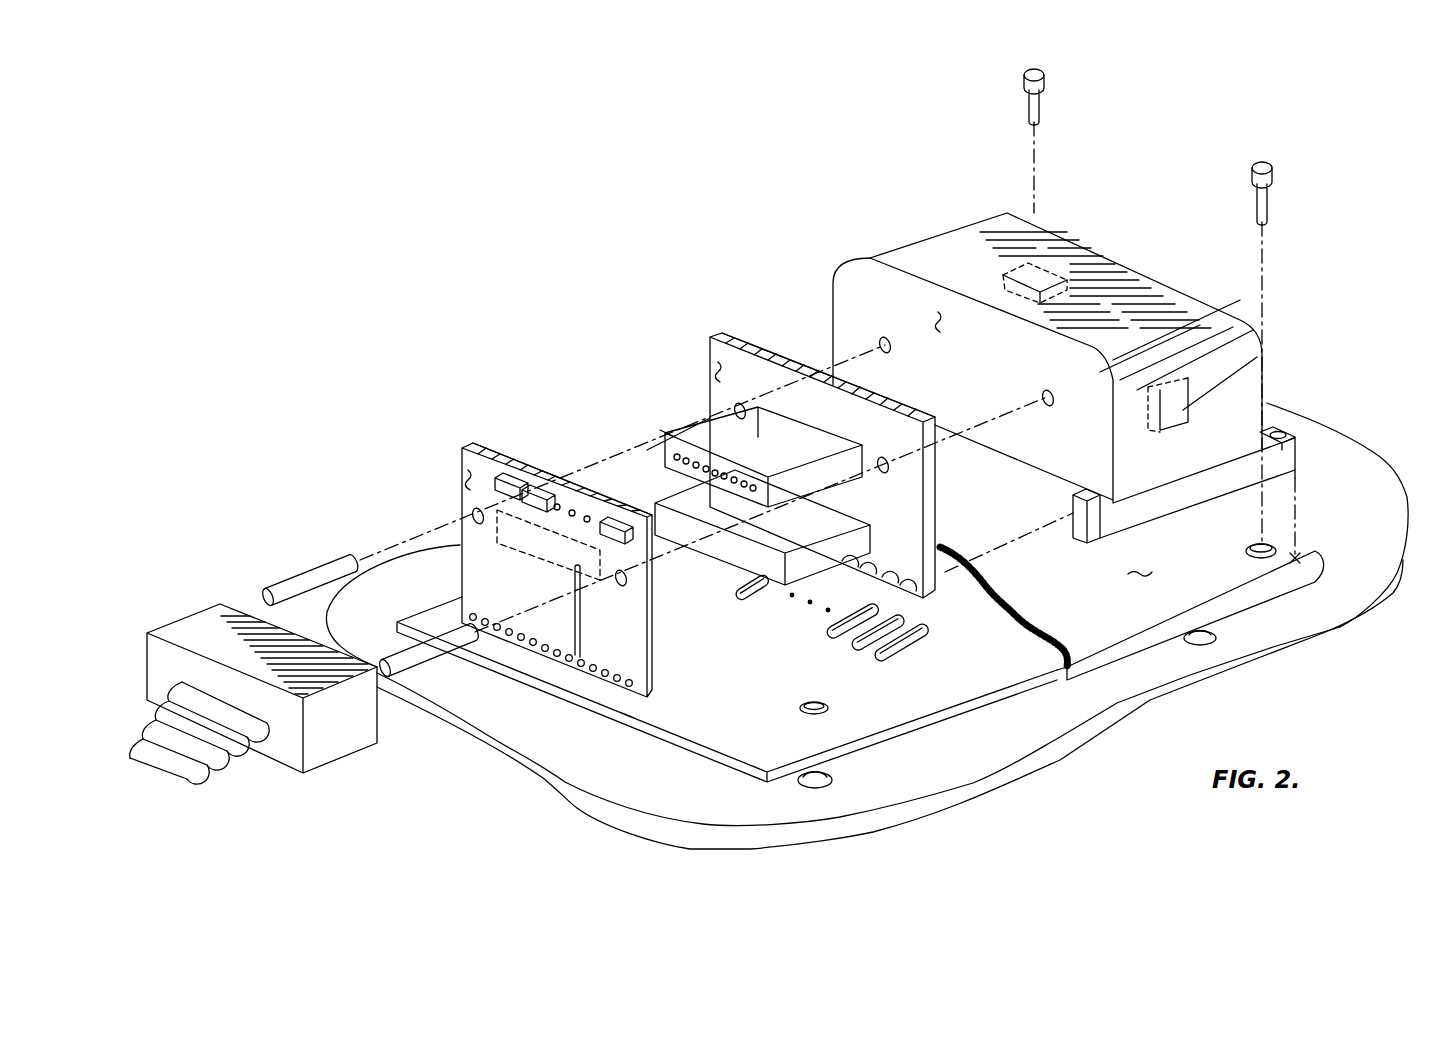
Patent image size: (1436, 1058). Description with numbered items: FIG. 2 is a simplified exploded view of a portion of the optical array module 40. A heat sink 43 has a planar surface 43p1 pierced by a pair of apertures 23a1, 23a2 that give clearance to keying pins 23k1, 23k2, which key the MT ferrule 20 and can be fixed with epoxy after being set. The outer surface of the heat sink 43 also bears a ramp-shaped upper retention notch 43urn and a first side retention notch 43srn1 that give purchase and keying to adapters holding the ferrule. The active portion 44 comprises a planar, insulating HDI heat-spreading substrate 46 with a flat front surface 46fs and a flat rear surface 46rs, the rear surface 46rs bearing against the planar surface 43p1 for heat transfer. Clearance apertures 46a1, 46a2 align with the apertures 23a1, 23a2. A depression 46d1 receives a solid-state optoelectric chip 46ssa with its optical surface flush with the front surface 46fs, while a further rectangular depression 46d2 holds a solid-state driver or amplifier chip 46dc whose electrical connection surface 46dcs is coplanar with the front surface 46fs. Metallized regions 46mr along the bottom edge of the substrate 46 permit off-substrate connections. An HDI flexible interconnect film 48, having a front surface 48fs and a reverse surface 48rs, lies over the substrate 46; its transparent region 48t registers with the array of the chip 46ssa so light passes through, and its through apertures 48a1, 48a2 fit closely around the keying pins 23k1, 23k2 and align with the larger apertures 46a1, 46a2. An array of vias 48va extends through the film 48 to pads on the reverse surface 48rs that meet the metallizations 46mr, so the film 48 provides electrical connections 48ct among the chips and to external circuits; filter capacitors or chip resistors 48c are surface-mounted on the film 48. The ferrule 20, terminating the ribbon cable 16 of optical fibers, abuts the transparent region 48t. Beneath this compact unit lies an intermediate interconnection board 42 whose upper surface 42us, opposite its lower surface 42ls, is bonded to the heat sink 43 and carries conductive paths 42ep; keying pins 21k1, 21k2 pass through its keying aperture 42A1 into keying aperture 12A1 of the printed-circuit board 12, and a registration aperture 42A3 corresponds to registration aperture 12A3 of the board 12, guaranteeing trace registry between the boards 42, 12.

The printed-circuit board 12 is at (873, 618).
The keying aperture 12A1 is at (1207, 630).
The registration aperture 12A3 is at (840, 773).
The ribbon cable 16 is at (230, 750).
The MT ferrule 20 is at (333, 730).
The keying pin 21k1 is at (1270, 198).
The keying pin 21k2 is at (1027, 103).
The aperture 23a1 is at (1043, 393).
The aperture 23a2 is at (877, 340).
The keying pin 23k1 is at (437, 667).
The keying pin 23k2 is at (322, 563).
The optical array module 40 is at (1272, 711).
The intermediate interconnection board 42 is at (1303, 562).
The keying aperture 42A1 is at (1268, 543).
The registration aperture 42A3 is at (813, 714).
The electrically conductive pads or paths 42ep is at (853, 653).
The lower surface of carrier plate 42ls is at (1125, 647).
The upper surface 42us is at (1140, 573).
The heat sink 43 is at (1212, 312).
The planar surface 43p1 is at (937, 320).
The first side retention notch 43srn1 is at (1180, 407).
The upper retention notch 43urn is at (1033, 263).
The active portion 44 is at (797, 263).
The HDI heat-spreading substrate 46 is at (757, 350).
The clearance through aperture 46a1 is at (880, 470).
The clearance through aperture 46a2 is at (737, 403).
The depression 46d1 is at (800, 440).
The rectangular depression 46d2 is at (823, 513).
The solid-state driver chip 46dc is at (793, 590).
The electrical connection surface 46dcs is at (737, 582).
The front surface 46fs is at (710, 373).
The metallized regions 46mr is at (887, 580).
The rear surface 46rs is at (793, 363).
The solid-state optoelectric chip 46ssa is at (690, 412).
The HDI flexible interconnect film 48 is at (462, 482).
The through aperture 48a1 is at (628, 584).
The through aperture 48a2 is at (467, 520).
The filter capacitors 48c is at (550, 472).
The electrical connections 48ct is at (582, 650).
The front surface 48fs is at (462, 483).
The reverse surface 48rs is at (493, 453).
The transparent region 48t is at (550, 550).
The array of vias 48va is at (627, 726).